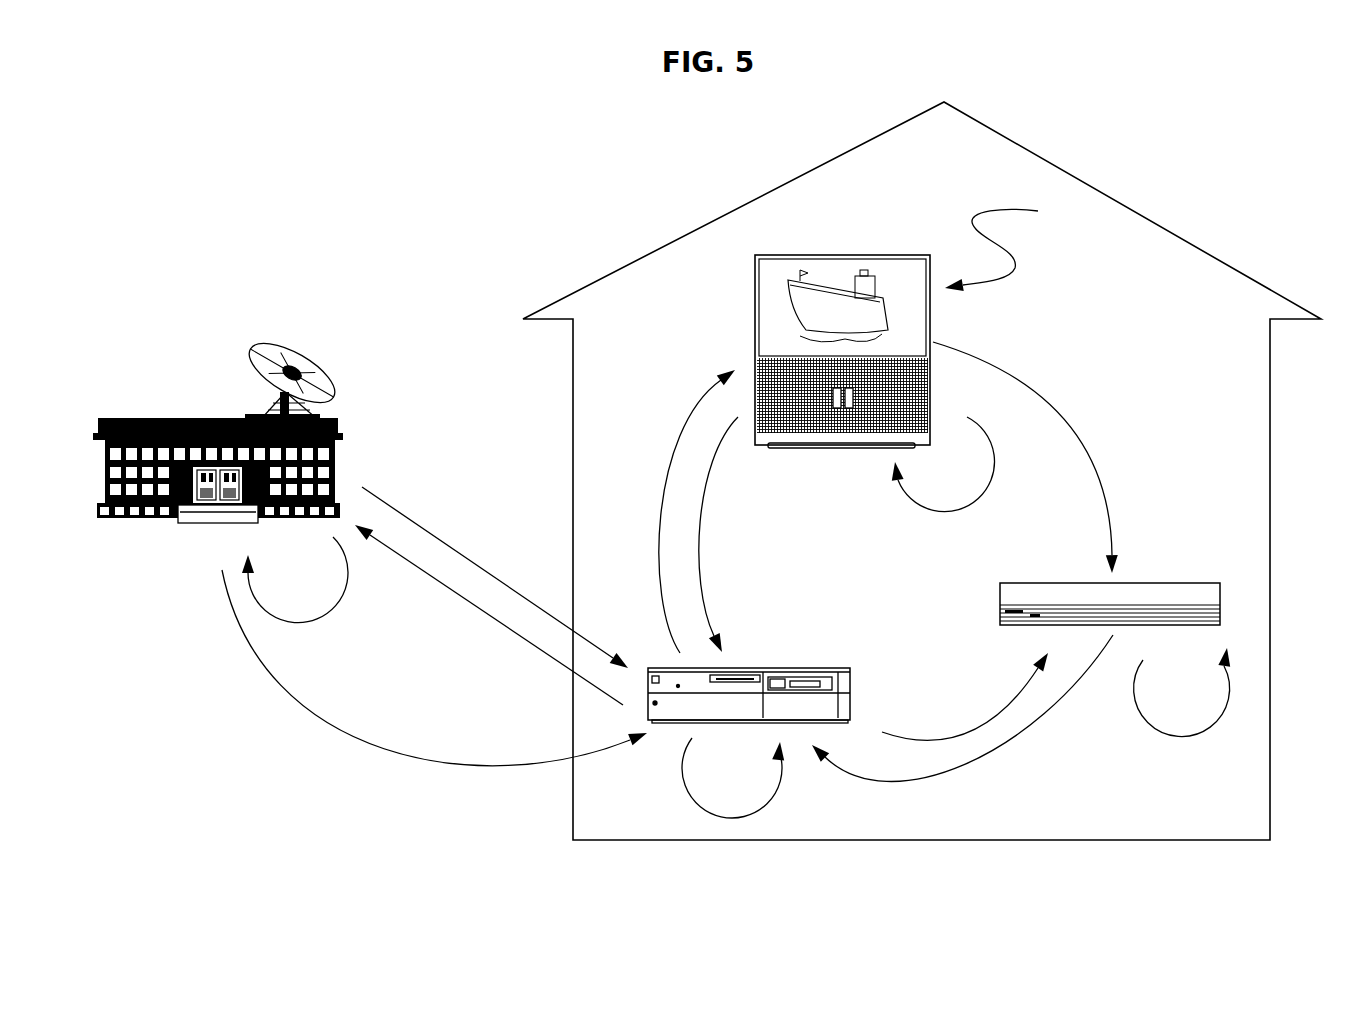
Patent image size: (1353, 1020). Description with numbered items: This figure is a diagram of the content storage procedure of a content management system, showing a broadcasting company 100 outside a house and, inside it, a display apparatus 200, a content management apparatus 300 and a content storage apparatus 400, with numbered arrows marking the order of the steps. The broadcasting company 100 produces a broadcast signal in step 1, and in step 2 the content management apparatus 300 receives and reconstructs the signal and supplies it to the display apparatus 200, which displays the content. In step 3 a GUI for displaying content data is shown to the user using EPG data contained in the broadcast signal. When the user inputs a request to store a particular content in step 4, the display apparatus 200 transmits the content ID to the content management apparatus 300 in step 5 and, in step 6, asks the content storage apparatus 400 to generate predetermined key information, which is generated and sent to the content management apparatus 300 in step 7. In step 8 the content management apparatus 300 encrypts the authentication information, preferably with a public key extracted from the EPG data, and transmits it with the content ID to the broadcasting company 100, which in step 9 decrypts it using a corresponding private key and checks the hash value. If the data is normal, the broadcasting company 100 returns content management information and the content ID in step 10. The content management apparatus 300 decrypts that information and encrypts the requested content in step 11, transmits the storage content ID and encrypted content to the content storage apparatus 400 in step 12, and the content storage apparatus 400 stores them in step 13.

The broadcasting company 100 is at (334, 418).
The display apparatus 200 is at (811, 255).
The content management apparatus 300 is at (806, 668).
The content storage apparatus 400 is at (1163, 583).
The broadcast signal production step 1 is at (495, 577).
The reconstructed broadcast signal supply step 2 is at (680, 511).
The GUI display step 3 is at (956, 469).
The content storage request input step 4 is at (993, 253).
The content ID transmission step 5 is at (725, 534).
The key information generation request step 6 is at (1025, 457).
The key information transmission step 7 is at (962, 708).
The encrypted authentication information transmission step 8 is at (489, 615).
The authentication information decryption step 9 is at (301, 589).
The content management information transmission step 10 is at (434, 673).
The content encryption step 11 is at (721, 778).
The encrypted content transmission step 12 is at (965, 696).
The content storing step 13 is at (1182, 712).